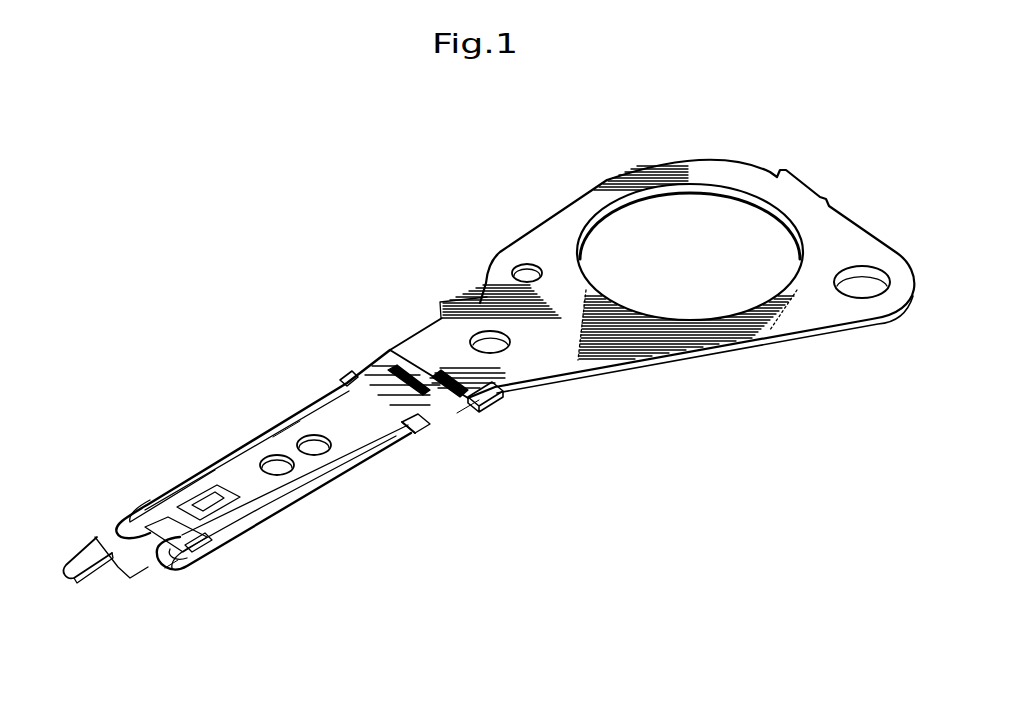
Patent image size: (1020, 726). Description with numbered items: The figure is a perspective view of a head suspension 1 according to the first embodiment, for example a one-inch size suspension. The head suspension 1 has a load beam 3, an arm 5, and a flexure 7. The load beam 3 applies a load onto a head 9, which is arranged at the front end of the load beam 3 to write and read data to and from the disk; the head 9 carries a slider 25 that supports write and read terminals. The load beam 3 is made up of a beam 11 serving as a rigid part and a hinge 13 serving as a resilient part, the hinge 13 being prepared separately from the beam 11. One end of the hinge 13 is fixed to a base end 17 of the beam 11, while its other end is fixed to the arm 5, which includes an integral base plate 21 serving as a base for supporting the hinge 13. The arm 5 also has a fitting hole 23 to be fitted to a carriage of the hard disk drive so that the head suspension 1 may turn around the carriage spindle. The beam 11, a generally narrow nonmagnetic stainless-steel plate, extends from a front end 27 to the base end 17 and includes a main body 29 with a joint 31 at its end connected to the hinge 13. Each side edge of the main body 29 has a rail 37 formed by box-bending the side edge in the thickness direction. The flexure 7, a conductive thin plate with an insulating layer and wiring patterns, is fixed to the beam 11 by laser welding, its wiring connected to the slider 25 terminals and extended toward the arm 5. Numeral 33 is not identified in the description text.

The head suspension 1 is at (483, 195).
The load beam 3 is at (320, 393).
The arm 5 is at (647, 160).
The flexure 7 is at (247, 537).
The head 9 is at (172, 572).
The beam 11 is at (350, 437).
The hinge 13 is at (458, 412).
The base end 17 is at (353, 372).
The base plate 21 is at (445, 347).
The fitting hole 23 is at (710, 192).
The slider 25 is at (193, 540).
The front end 27 is at (145, 493).
The main body 29 is at (263, 477).
The joint 31 is at (425, 436).
The terminal 33 is at (87, 567).
The rail 37 is at (273, 437).